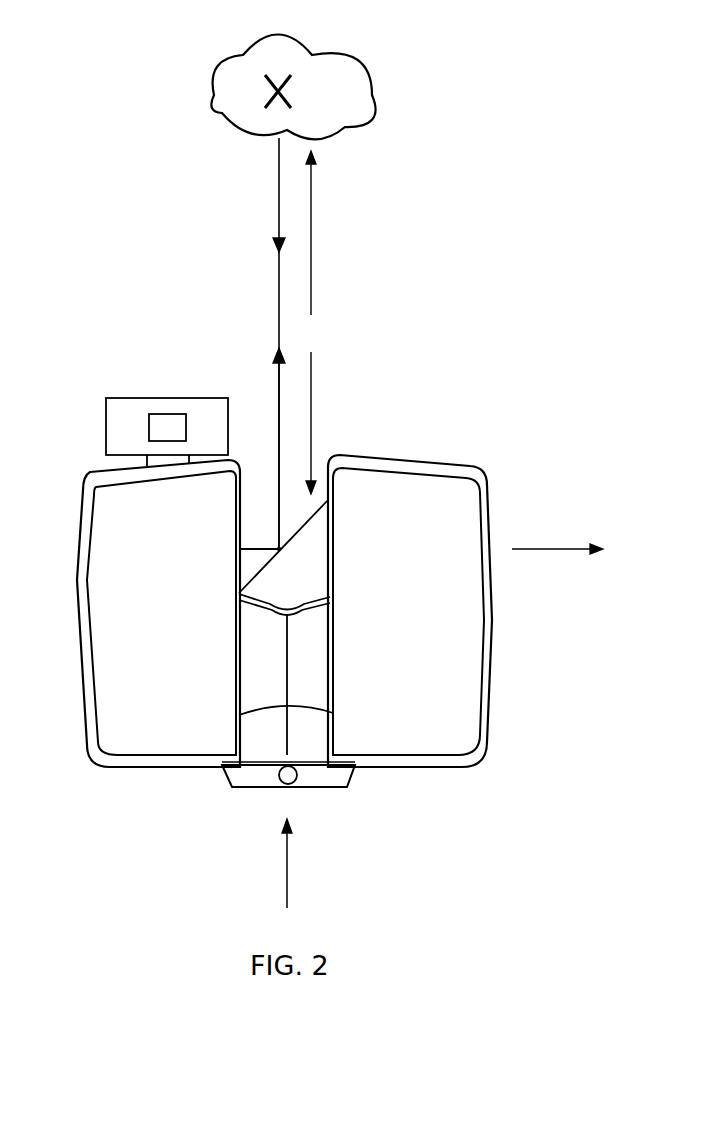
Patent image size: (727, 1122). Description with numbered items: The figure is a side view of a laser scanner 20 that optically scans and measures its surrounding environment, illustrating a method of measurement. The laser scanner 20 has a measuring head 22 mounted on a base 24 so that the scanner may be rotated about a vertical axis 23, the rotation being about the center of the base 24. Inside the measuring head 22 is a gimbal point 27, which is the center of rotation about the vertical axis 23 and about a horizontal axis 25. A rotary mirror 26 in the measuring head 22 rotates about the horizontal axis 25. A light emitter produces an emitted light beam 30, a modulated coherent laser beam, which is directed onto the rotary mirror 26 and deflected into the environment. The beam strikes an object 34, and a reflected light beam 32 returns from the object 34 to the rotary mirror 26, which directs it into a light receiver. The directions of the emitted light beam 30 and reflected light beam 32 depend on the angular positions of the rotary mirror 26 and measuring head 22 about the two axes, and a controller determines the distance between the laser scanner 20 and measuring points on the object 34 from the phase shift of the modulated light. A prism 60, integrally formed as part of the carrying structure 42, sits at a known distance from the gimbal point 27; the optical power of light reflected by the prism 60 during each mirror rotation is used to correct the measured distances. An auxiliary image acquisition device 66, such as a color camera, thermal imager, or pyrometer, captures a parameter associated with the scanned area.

The laser scanner 20 is at (142, 182).
The measuring head 22 is at (479, 406).
The vertical axis 23 is at (290, 885).
The base 24 is at (226, 786).
The horizontal axis 25 is at (541, 549).
The rotary mirror 26 is at (262, 570).
The gimbal point 27 is at (283, 549).
The emitted light beam 30 is at (278, 378).
The reflected light beam 32 is at (278, 228).
The object 34 is at (352, 56).
The carrying structure 42 is at (371, 816).
The prism 60 is at (290, 616).
The auxiliary image acquisition device 66 is at (130, 364).